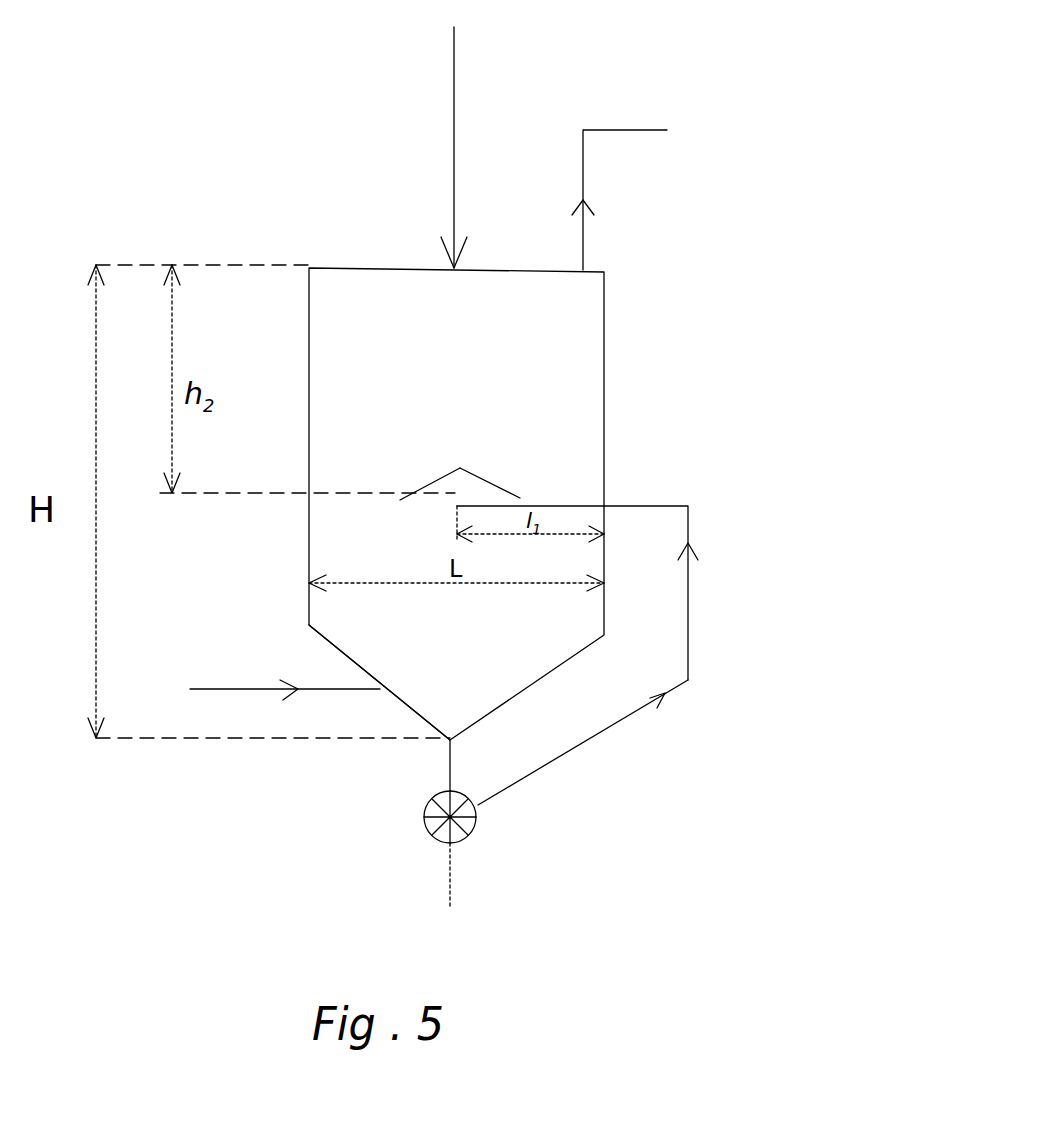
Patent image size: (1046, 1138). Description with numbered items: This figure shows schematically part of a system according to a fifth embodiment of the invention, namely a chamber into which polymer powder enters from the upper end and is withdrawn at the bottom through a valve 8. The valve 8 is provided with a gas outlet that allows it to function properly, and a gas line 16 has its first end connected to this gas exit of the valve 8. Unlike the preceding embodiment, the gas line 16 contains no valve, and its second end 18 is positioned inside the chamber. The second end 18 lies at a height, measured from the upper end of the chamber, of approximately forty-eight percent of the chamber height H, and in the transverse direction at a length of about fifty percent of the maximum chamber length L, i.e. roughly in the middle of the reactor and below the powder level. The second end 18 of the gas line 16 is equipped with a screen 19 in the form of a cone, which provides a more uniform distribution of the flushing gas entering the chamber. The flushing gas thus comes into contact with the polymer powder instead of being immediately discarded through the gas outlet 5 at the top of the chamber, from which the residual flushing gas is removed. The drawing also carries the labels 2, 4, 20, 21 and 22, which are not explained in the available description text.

The gas feed inlet 2 is at (454, 130).
The gas outlet 5 is at (633, 130).
The separation chamber 20 is at (623, 277).
The second end 18 is at (470, 477).
The screen 19 is at (493, 482).
The side duct 22 is at (605, 482).
The gas line 16 is at (688, 628).
The valve 8 is at (427, 815).
The side inlet 4 is at (232, 695).
The hopper wall 21 is at (405, 720).